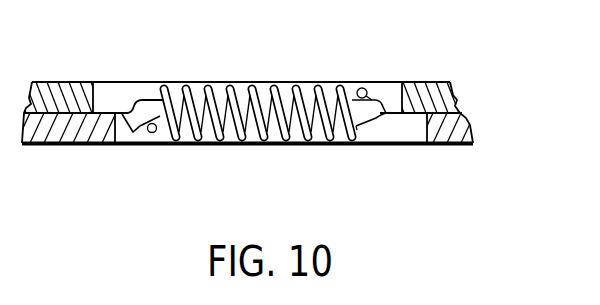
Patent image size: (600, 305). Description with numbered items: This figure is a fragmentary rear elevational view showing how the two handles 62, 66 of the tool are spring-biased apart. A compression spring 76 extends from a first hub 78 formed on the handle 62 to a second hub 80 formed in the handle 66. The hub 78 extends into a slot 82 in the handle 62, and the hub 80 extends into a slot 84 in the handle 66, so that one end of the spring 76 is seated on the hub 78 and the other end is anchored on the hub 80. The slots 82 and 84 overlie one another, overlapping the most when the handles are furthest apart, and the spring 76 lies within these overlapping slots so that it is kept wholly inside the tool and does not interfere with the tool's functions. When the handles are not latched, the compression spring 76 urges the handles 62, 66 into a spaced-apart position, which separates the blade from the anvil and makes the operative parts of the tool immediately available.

The handle 62 is at (78, 87).
The handle 66 is at (472, 132).
The compression spring 76 is at (190, 105).
The first hub 78 is at (390, 100).
The second hub 80 is at (128, 133).
The slot 82 is at (123, 92).
The slot 84 is at (400, 133).